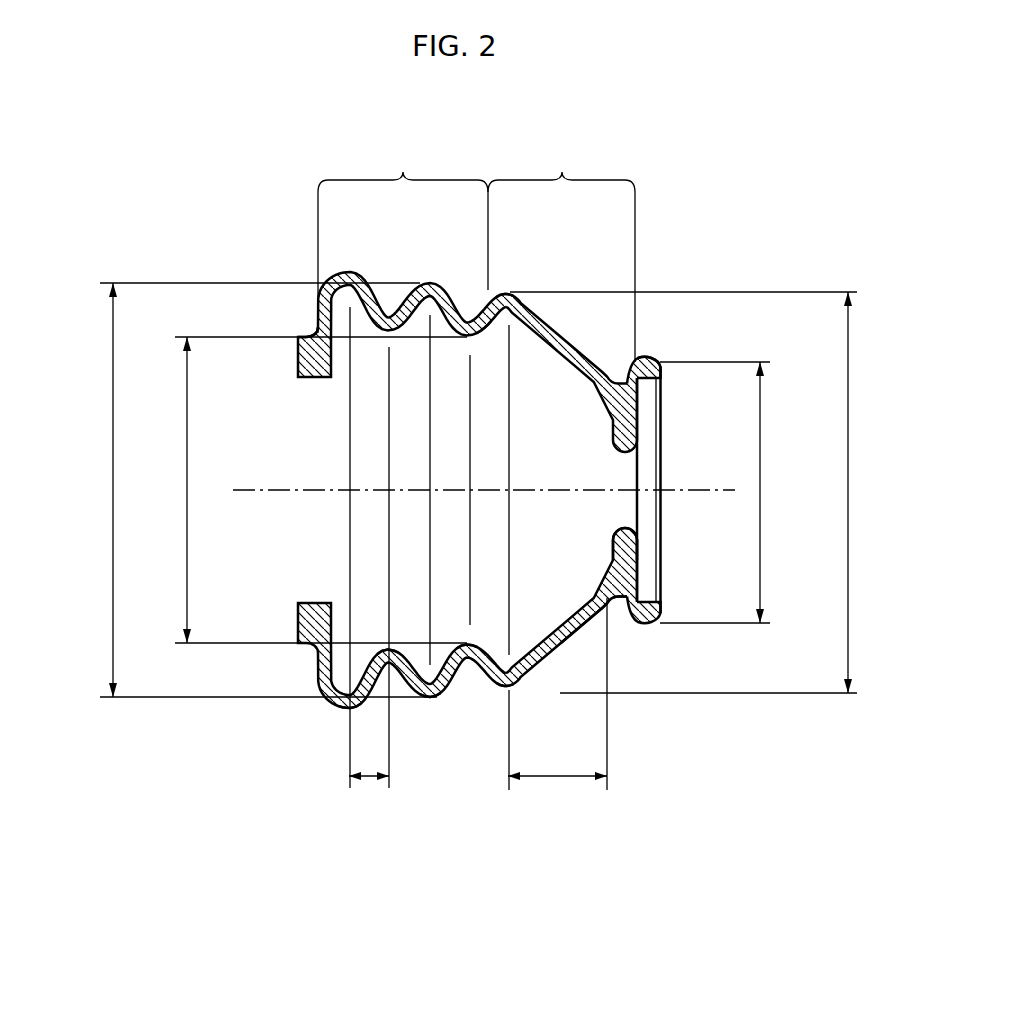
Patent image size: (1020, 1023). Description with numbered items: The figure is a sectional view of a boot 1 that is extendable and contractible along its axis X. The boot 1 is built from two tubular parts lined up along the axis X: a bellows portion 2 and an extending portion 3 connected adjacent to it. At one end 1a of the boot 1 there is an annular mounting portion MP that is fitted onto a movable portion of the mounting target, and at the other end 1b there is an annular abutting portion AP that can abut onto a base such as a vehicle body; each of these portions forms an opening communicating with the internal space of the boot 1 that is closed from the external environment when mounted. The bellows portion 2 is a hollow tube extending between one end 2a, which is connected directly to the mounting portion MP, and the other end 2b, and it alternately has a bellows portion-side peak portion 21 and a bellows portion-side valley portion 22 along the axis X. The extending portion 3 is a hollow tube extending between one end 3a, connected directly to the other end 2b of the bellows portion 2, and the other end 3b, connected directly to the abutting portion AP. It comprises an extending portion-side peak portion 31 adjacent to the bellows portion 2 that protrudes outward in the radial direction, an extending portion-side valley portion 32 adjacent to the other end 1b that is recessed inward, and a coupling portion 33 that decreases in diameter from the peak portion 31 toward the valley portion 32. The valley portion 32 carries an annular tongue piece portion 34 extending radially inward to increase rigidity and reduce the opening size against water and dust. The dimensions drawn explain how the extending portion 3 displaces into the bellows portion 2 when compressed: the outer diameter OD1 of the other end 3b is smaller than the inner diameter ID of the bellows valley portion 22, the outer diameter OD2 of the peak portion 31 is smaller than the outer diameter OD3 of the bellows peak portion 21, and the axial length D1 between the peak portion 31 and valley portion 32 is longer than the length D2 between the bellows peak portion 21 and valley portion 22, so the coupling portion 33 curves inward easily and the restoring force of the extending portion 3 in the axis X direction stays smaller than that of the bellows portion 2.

The boot 1 is at (737, 183).
The bellows portion 2 is at (404, 176).
The extending portion 3 is at (564, 176).
The one end of the boot 1a is at (298, 368).
The other end of the boot 1b is at (661, 373).
The one end of the bellows portion 2a is at (315, 330).
The other end of the bellows portion 2b is at (487, 313).
The one end of the extending portion 3a is at (505, 292).
The other end of the extending portion 3b is at (637, 360).
The bellows portion-side peak portion 21 is at (348, 708).
The bellows portion-side valley portion 22 is at (390, 655).
The extending portion-side peak portion 31 is at (498, 690).
The extending portion-side valley portion 32 is at (612, 590).
The coupling portion 33 is at (568, 634).
The tongue piece portion 34 is at (625, 541).
The abutting portion AP is at (653, 366).
The mounting portion MP is at (305, 348).
The axis X is at (238, 492).
The outer diameter of the other end of the extending portion OD1 is at (762, 490).
The outer diameter of the extending portion-side peak portion OD2 is at (850, 490).
The outer diameter of the bellows portion-side peak portion OD3 is at (110, 482).
The inner diameter of the bellows portion-side valley portion ID is at (185, 482).
The length between the extending portion-side peak portion and valley portion D1 is at (555, 782).
The length between the bellows portion-side peak portion and valley portion D2 is at (368, 782).